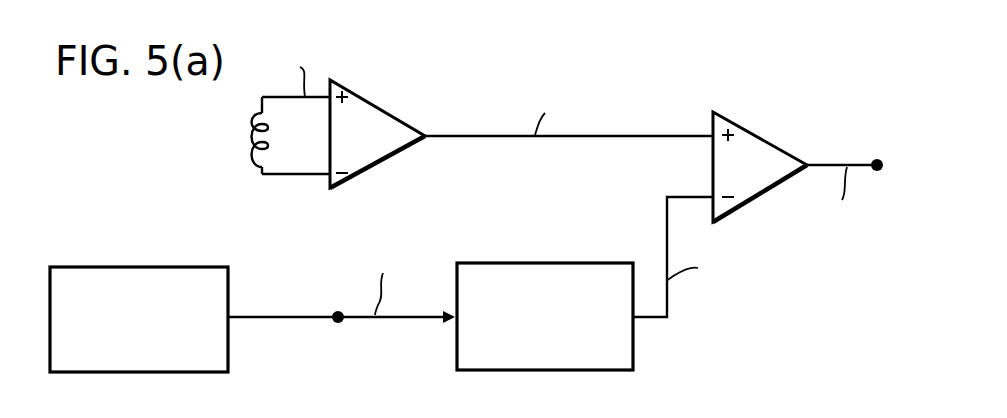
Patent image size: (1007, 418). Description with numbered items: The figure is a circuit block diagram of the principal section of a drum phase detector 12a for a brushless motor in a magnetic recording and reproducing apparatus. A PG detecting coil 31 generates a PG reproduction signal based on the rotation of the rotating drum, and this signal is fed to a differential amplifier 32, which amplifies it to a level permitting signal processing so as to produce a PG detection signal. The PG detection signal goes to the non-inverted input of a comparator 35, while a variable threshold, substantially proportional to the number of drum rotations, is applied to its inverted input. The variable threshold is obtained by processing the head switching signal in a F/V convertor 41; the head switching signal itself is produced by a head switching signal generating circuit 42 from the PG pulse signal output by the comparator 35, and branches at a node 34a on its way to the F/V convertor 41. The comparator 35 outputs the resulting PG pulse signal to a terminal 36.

The drum phase detector 12a is at (733, 42).
The PG detecting coil 31 is at (248, 135).
The differential amplifier 32 is at (390, 110).
The node (head switching signal input) 34a is at (334, 311).
The comparator 35 is at (755, 133).
The terminal 36 is at (872, 157).
The F/V convertor 41 is at (502, 263).
The HSW generating circuit 42 is at (130, 265).